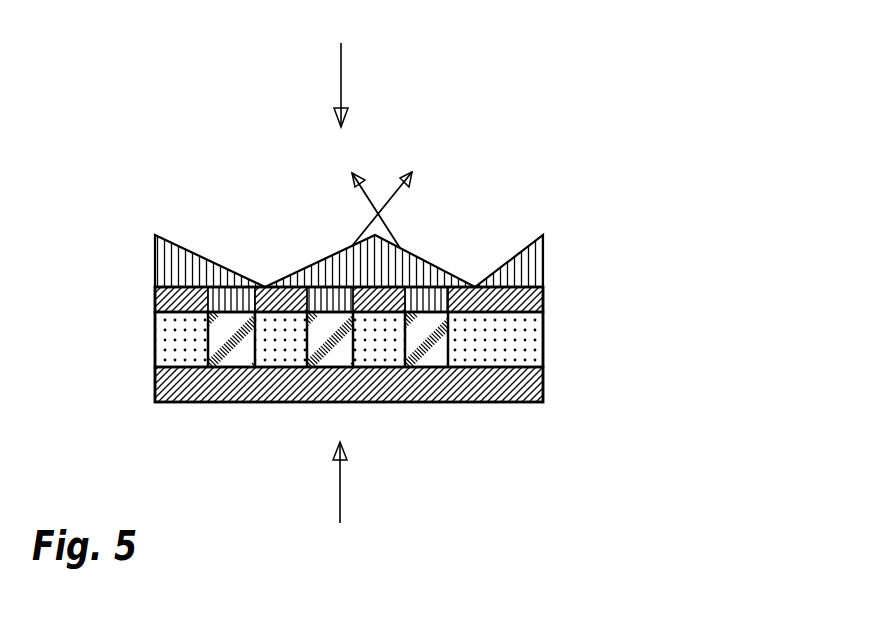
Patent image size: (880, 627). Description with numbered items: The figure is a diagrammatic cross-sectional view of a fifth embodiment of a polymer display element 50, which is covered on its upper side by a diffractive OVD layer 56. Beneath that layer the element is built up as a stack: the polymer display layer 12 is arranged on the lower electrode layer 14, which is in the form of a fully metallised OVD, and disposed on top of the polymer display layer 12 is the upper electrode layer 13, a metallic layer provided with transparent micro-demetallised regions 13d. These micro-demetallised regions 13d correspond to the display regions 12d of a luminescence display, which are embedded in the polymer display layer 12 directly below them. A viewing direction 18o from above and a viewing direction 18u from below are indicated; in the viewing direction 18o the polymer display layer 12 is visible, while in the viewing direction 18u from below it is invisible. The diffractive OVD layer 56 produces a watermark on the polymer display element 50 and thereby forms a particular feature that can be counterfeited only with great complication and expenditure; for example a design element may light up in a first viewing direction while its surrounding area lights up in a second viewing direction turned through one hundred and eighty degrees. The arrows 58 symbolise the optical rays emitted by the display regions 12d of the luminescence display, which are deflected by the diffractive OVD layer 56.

The polymer display element 50 is at (655, 337).
The diffractive OVD layer 56 is at (543, 267).
The upper electrode layer 13 is at (543, 295).
The micro-demetallised regions 13d is at (328, 300).
The polymer display layer 12 is at (543, 333).
The display regions 12d is at (430, 350).
The lower electrode layer 14 is at (543, 380).
The viewing direction from above 18o is at (340, 85).
The viewing direction from below 18u is at (340, 478).
The arrows 58 is at (392, 195).